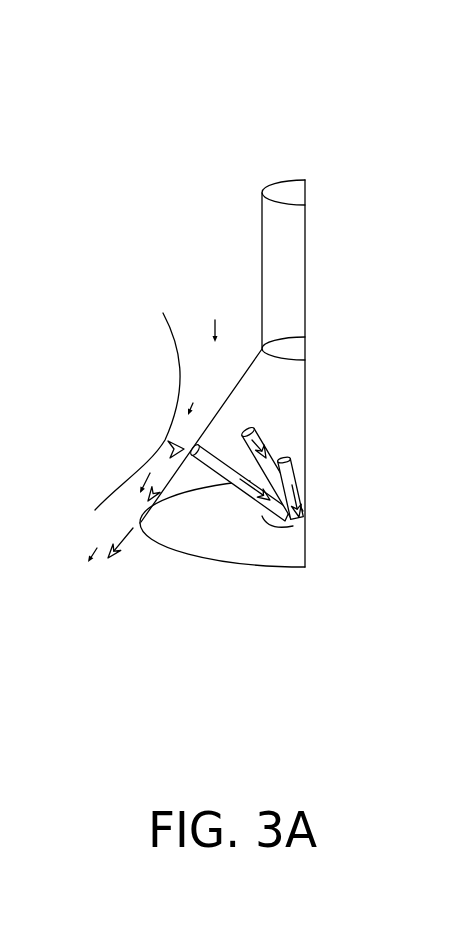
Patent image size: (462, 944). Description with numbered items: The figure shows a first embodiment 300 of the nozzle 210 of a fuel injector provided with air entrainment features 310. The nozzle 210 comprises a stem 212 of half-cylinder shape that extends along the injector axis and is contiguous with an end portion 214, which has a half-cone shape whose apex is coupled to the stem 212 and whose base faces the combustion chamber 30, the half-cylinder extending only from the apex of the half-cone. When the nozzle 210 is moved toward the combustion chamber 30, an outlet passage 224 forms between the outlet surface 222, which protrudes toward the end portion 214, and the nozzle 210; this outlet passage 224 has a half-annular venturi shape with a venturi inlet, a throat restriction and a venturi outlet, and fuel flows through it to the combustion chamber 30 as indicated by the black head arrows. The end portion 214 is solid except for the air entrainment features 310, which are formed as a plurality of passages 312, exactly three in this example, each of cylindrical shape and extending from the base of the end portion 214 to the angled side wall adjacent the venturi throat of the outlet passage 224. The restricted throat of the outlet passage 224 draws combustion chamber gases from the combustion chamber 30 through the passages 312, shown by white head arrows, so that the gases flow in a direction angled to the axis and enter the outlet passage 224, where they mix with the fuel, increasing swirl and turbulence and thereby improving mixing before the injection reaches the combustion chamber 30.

The first embodiment 300 is at (378, 72).
The stem 212 is at (262, 222).
The nozzle 210 is at (173, 290).
The air entrainment features 310 is at (240, 410).
The end portion 214 is at (141, 532).
The passages 312 is at (290, 452).
The outlet surface 222 is at (162, 447).
The outlet passage 224 is at (118, 523).
The combustion chamber 30 is at (269, 653).